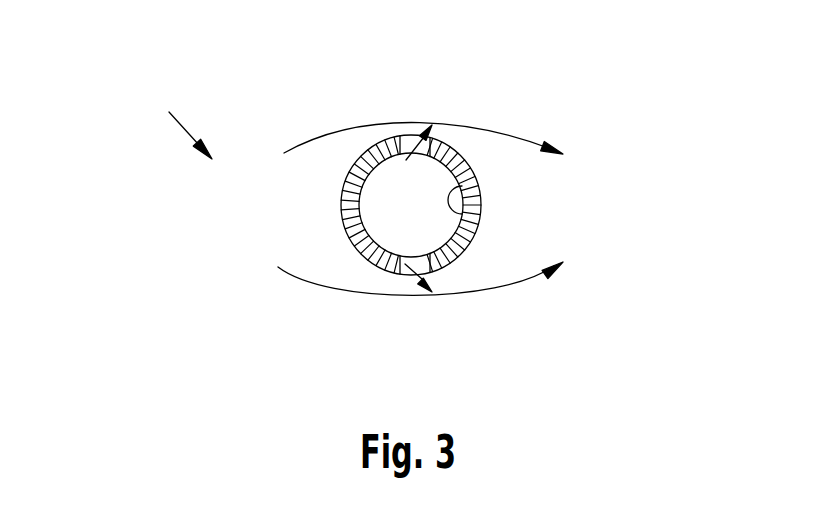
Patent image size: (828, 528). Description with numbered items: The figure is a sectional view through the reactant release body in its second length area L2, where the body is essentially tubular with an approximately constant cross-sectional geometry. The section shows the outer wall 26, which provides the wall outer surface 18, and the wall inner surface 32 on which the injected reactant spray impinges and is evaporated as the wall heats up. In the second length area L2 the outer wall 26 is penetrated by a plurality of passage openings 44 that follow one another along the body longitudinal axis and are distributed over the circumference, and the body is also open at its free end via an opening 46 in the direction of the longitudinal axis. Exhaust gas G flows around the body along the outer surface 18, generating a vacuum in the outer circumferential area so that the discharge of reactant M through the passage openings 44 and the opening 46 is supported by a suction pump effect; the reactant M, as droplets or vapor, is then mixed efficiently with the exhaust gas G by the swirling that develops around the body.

The wall outer surface 18 is at (352, 249).
The outer wall 26 is at (487, 195).
The wall inner surface 32 is at (483, 218).
The passage openings 44 is at (406, 141).
The opening 46 is at (377, 213).
The exhaust gas g is at (312, 145).
The reactant M is at (400, 192).
The second length area L2 is at (171, 116).